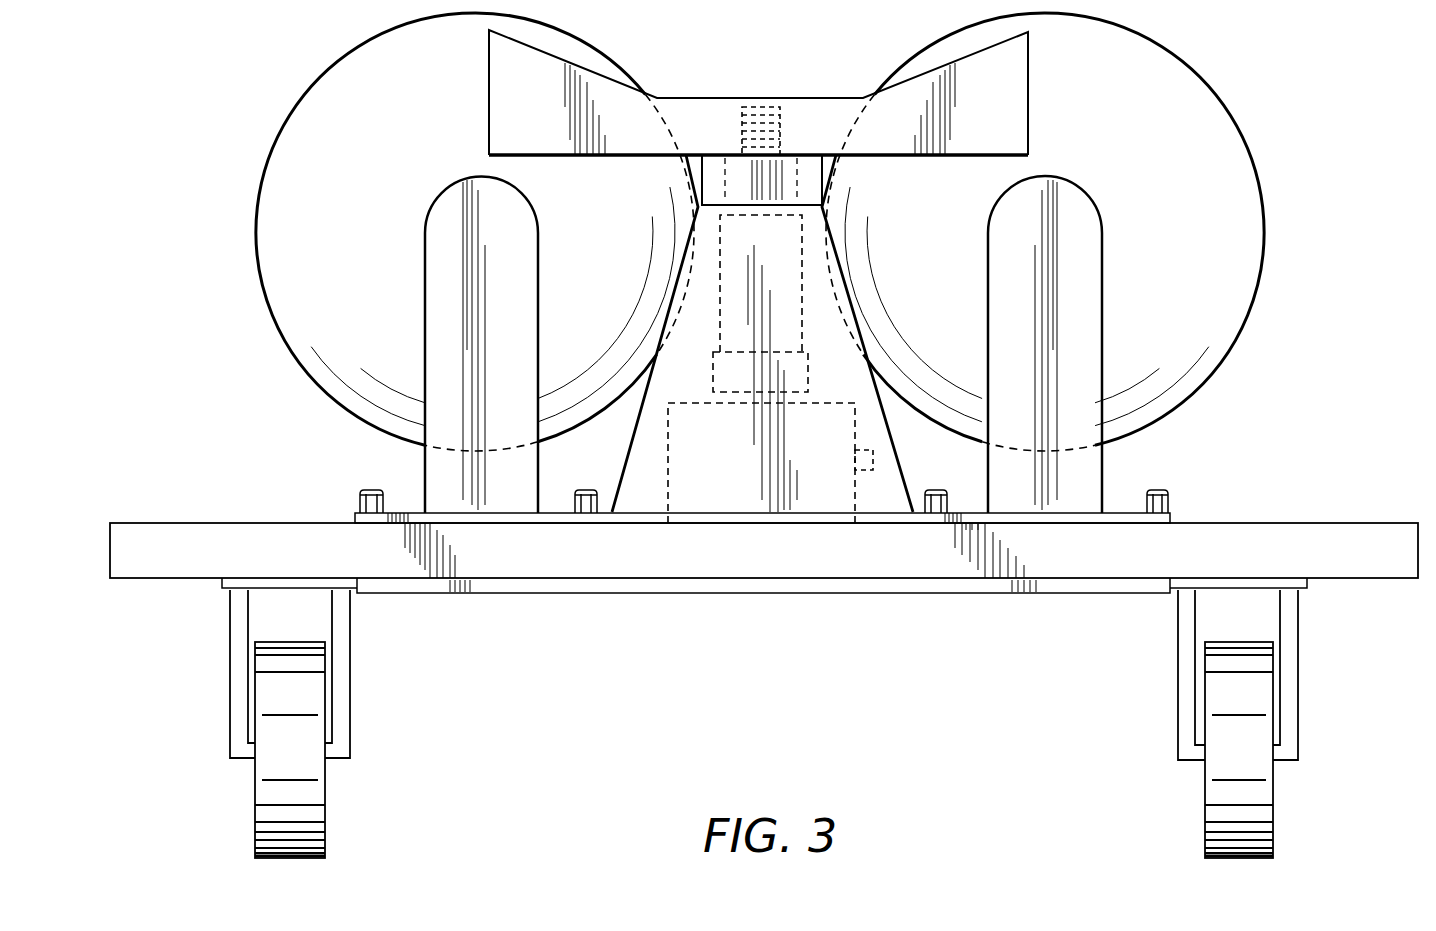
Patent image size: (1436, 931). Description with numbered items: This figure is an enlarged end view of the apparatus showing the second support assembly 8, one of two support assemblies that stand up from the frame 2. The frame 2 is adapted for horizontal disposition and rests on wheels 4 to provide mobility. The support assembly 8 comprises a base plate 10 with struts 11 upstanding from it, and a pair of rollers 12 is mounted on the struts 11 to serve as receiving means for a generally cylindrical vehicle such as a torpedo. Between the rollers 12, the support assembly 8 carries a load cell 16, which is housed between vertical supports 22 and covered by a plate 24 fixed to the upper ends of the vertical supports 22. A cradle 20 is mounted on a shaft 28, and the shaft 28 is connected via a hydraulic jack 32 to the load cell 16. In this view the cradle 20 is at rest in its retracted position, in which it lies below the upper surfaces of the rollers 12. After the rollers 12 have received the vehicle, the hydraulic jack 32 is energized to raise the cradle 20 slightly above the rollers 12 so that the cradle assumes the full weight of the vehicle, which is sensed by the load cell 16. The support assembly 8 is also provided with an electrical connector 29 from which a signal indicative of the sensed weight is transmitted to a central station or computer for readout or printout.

The second support assembly 8 is at (181, 96).
The rollers 12 is at (262, 182).
The struts 11 is at (425, 298).
The cradle 20 is at (712, 98).
The shaft 28 is at (780, 118).
The plate 24 is at (818, 173).
The vertical supports 22 is at (840, 262).
The hydraulic jack 32 is at (802, 318).
The load cell 16 is at (668, 463).
The electrical connector 29 is at (878, 460).
The base plate 10 is at (405, 513).
The frame 2 is at (1300, 523).
The wheels 4 is at (325, 812).